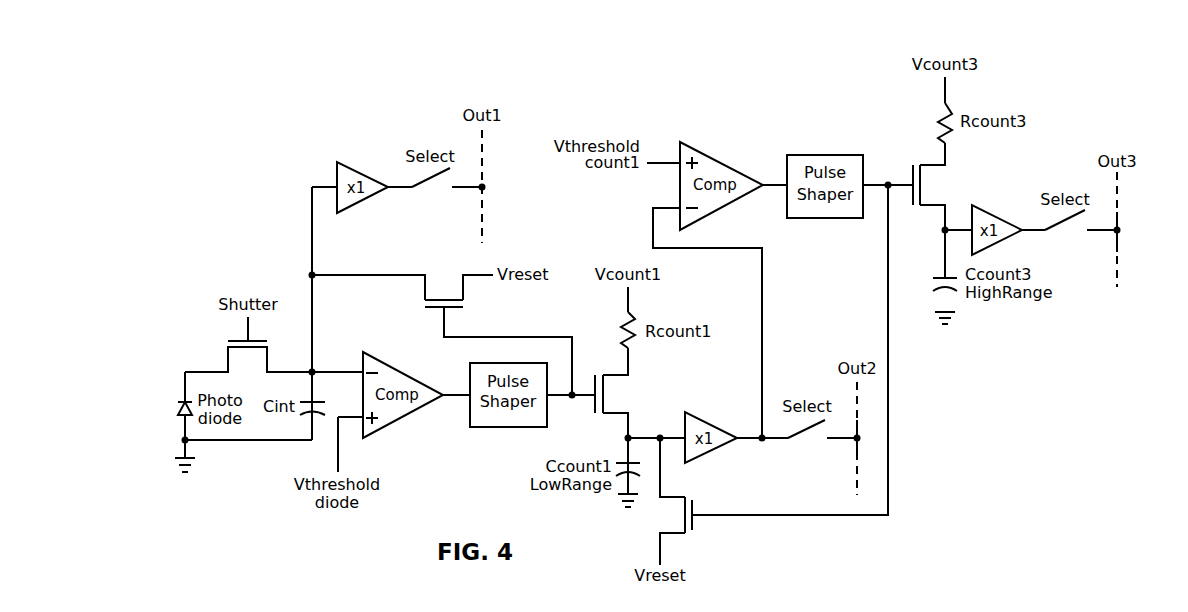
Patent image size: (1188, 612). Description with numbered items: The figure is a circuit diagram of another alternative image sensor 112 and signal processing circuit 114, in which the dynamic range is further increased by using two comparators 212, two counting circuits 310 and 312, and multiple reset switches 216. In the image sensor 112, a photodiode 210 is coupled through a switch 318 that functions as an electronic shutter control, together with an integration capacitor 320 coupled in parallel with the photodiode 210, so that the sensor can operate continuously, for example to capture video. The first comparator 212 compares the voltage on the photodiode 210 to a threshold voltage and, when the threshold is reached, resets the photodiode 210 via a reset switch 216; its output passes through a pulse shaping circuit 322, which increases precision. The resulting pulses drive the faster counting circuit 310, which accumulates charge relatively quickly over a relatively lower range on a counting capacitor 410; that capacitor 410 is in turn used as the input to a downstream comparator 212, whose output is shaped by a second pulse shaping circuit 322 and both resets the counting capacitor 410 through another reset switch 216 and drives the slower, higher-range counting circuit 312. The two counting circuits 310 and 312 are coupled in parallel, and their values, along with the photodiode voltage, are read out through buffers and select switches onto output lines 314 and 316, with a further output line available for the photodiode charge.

The image sensor 112 is at (167, 468).
The signal processing circuit 114 is at (797, 74).
The photodiode 210 is at (176, 406).
The comparator 212 is at (403, 369).
The reset switch 216 is at (423, 290).
The counting circuit 310 is at (905, 505).
The counting circuit 312 is at (1069, 143).
The output column line Out2 314 is at (855, 458).
The output column line Out3 316 is at (1115, 250).
The switch 318 is at (246, 327).
The integration capacitor Cint 320 is at (322, 401).
The pulse shaping circuit 322 is at (487, 428).
The counting capacitor 410 is at (621, 463).